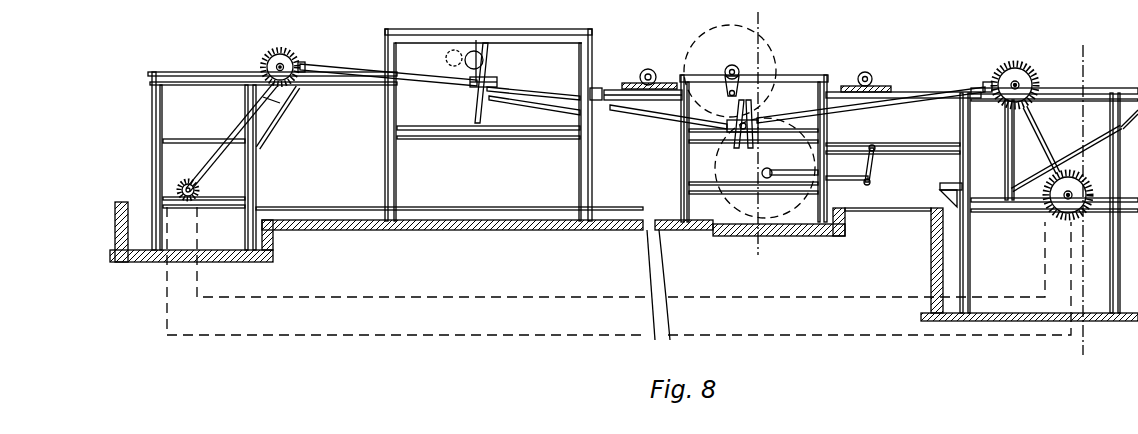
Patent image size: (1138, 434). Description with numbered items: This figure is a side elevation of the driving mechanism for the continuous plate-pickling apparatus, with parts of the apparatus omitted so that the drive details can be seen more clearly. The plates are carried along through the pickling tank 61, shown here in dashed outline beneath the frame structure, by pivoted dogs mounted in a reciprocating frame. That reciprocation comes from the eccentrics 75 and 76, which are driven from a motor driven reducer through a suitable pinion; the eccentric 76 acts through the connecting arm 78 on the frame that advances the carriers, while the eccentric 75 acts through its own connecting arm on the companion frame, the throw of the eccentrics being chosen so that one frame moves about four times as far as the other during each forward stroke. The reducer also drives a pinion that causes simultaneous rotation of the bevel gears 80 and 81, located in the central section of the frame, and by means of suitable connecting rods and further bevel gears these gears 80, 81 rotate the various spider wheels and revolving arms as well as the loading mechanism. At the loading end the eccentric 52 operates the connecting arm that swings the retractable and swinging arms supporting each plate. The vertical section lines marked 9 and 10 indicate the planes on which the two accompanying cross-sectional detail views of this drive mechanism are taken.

The eccentric 52 is at (455, 52).
The pickling tank 61 is at (404, 335).
The eccentric 75 is at (776, 50).
The eccentric 76 is at (783, 222).
The connecting arm 78 is at (845, 185).
The bevel gear 80 is at (735, 137).
The bevel gear 81 is at (748, 110).
The section line 9 is at (746, 15).
The section line 10 is at (1097, 43).